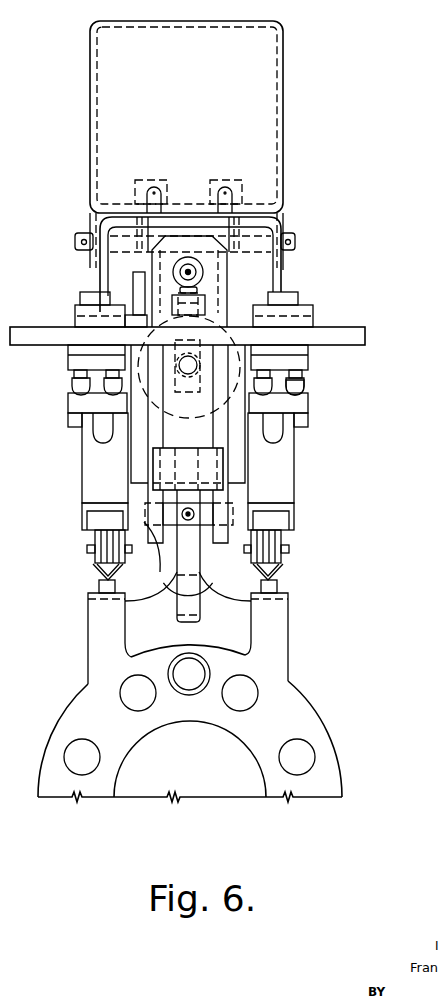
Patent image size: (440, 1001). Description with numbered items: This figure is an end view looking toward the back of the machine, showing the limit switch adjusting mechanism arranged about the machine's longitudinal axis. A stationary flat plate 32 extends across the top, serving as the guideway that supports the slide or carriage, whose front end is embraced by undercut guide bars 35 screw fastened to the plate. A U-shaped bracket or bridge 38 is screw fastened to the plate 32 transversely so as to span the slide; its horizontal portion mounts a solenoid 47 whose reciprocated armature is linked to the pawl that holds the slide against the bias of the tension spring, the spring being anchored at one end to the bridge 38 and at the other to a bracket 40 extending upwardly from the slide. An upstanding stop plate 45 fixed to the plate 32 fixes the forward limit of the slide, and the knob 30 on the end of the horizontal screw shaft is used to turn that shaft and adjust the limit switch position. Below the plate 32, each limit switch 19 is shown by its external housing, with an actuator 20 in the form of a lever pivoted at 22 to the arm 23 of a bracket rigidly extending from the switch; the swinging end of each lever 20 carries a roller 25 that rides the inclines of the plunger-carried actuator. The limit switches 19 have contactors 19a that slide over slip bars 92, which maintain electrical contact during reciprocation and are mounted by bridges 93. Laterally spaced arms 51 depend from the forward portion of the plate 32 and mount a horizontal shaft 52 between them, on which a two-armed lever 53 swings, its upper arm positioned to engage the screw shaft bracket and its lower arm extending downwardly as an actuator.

The solenoid 47 is at (276, 108).
The U-shaped bracket or bridge 38 is at (283, 226).
The stop plate 45 is at (223, 268).
The bracket 40 is at (133, 286).
The knob 30 is at (234, 338).
The undercut guide bars 35 is at (300, 302).
The flat plate 32 is at (366, 333).
The slip bars 92 is at (275, 385).
The contactors 19a is at (309, 374).
The bridges 93 is at (286, 408).
The limit switch 19 is at (294, 472).
The arm of bracket 23 is at (292, 528).
The pivot 22 is at (290, 550).
The actuator 20 is at (281, 573).
The roller 25 is at (283, 588).
The laterally spaced arms 51 is at (188, 586).
The horizontal shaft 52 is at (135, 527).
The two-armed lever 53 is at (204, 556).